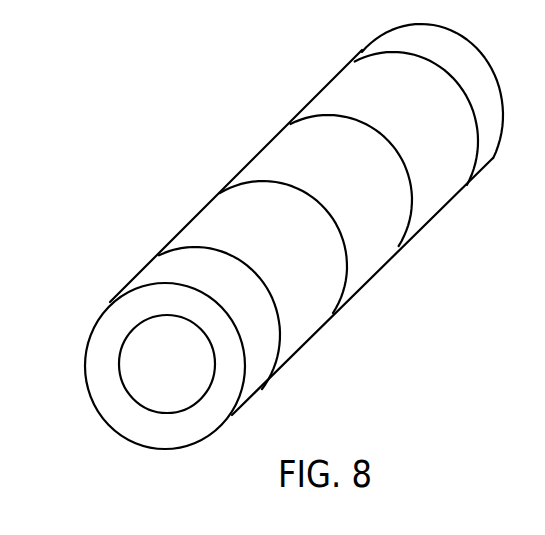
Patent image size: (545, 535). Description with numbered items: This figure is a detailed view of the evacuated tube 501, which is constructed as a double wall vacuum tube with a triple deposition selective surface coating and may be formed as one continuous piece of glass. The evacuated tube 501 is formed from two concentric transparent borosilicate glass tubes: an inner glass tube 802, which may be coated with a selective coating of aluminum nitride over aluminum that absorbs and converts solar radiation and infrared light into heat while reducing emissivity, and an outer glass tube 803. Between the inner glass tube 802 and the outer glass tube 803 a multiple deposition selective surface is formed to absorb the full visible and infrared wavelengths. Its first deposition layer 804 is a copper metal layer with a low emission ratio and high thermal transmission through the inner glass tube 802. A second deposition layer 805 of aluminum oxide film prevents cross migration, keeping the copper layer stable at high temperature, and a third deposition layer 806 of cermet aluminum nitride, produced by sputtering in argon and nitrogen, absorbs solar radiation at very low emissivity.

The evacuated tube 501 is at (128, 144).
The inner glass tube 802 is at (140, 363).
The outer glass tube 803 is at (250, 386).
The first deposition layer 804 is at (307, 332).
The second deposition layer 805 is at (367, 272).
The third deposition layer 806 is at (432, 200).